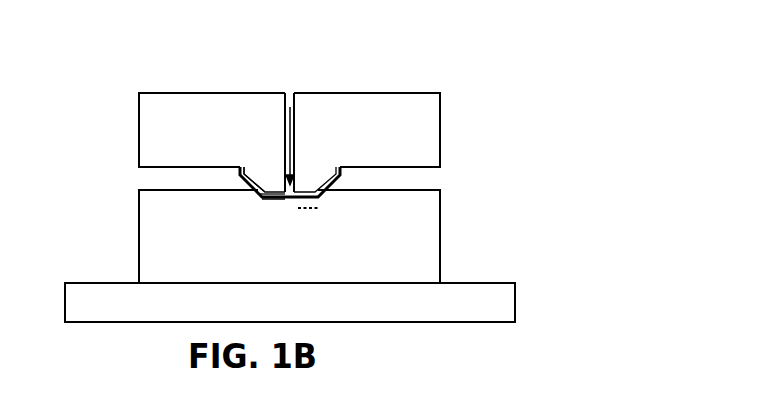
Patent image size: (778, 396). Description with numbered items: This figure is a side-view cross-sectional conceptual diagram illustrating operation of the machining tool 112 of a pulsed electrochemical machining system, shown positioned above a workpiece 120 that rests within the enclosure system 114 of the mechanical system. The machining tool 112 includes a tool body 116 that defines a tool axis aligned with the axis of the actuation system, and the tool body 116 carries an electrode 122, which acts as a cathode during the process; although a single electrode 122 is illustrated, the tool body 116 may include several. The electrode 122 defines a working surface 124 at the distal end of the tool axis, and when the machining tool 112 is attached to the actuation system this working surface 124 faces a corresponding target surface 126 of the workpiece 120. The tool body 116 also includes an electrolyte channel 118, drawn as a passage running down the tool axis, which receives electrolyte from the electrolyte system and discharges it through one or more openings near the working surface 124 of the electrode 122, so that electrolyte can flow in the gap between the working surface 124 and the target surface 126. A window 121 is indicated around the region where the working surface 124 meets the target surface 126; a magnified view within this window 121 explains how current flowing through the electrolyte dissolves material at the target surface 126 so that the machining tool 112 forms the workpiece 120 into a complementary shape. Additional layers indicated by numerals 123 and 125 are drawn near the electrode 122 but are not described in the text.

The machining tool 112 is at (458, 77).
The enclosure system 114 is at (477, 283).
The tool body 116 is at (327, 97).
The electrolyte channel 118 is at (290, 92).
The workpiece 120 is at (441, 243).
The window 121 is at (343, 167).
The electrode 122 is at (340, 167).
The bond region 123 is at (314, 175).
The working surface 124 is at (262, 196).
The upper layer 125 is at (254, 189).
The target surface 126 is at (268, 202).